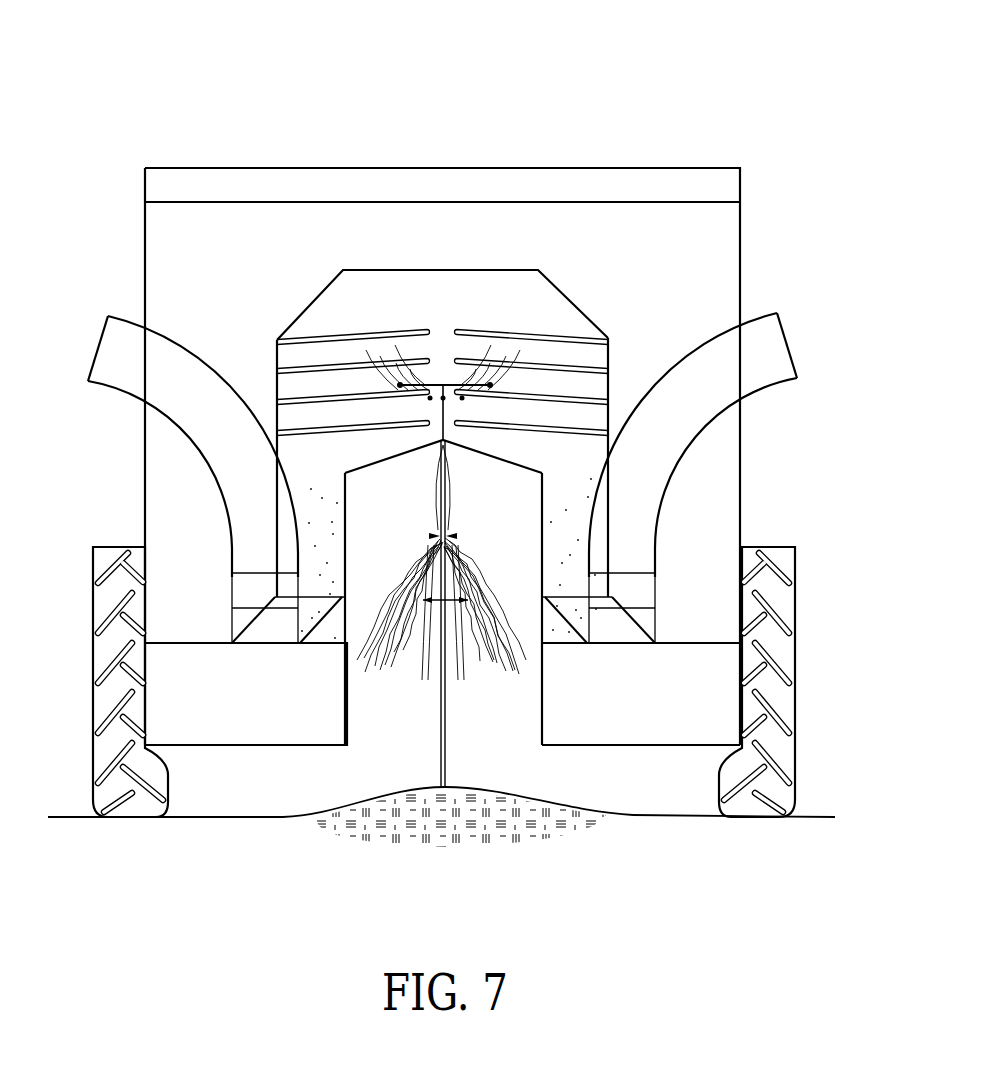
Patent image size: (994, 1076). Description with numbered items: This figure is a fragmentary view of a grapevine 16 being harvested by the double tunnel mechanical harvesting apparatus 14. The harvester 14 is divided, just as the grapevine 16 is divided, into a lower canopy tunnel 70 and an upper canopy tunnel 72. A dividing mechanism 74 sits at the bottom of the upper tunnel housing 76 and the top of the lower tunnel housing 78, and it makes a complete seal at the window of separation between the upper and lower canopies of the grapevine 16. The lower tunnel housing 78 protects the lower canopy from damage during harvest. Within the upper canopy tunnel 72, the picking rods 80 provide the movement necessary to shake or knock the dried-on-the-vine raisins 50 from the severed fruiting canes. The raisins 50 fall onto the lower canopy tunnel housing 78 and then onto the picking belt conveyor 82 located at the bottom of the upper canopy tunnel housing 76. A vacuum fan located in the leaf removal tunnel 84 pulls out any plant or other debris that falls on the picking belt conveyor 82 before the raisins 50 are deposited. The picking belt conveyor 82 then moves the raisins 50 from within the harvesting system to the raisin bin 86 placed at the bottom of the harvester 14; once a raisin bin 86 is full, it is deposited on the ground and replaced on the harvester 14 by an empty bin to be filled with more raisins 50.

The double tunnel harvesting apparatus 14 is at (442, 376).
The grapevine 16 is at (475, 697).
The dried-on-the-vine raisins 50 is at (577, 530).
The lower canopy tunnel 70 is at (400, 760).
The upper canopy tunnel 72 is at (432, 298).
The dividing mechanism 74 is at (378, 460).
The upper tunnel housing 76 is at (328, 282).
The lower tunnel housing 78 is at (345, 532).
The picking rods 80 is at (525, 330).
The picking belt conveyor 82 is at (563, 622).
The leaf removal tunnel 84 is at (793, 333).
The raisin bin 86 is at (298, 752).